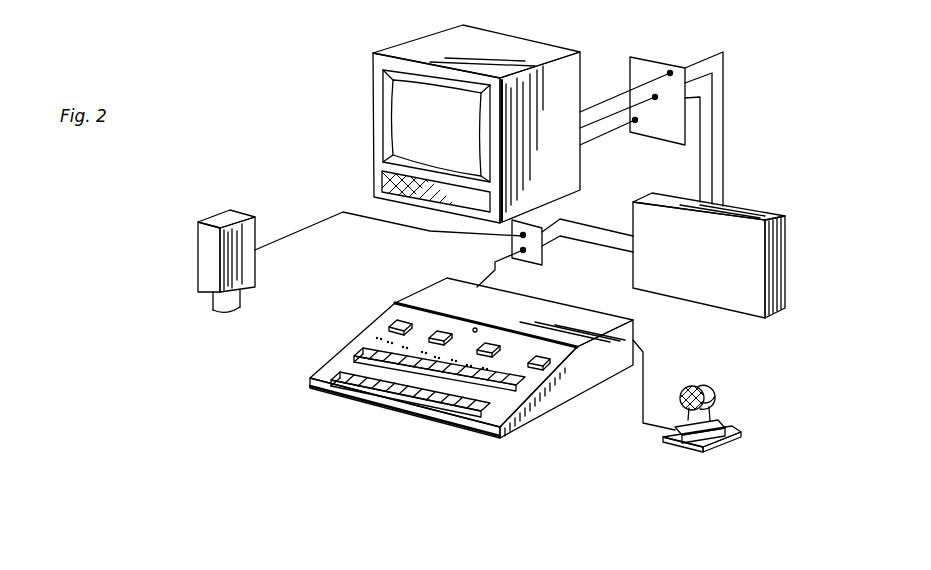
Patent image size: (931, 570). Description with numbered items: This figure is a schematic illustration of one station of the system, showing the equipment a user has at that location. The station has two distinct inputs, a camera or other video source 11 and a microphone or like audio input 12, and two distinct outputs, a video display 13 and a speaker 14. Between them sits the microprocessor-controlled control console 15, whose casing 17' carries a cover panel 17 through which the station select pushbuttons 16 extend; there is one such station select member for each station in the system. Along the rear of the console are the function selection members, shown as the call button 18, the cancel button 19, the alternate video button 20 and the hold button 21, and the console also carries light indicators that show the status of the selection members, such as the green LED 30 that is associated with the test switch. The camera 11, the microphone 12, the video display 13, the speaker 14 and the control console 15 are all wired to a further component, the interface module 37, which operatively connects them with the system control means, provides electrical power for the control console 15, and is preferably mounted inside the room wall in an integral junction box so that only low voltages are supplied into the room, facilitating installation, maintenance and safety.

The camera 11 is at (211, 201).
The microphone 12 is at (688, 475).
The video display 13 is at (350, 138).
The speaker 14 is at (386, 184).
The control console 15 is at (496, 353).
The pushbuttons 16 is at (512, 400).
The cover panel 17 is at (566, 379).
The casing 17' is at (644, 343).
The call button 18 is at (392, 324).
The cancel button 19 is at (443, 331).
The alternate video button 20 is at (493, 345).
The hold button 21 is at (540, 357).
The green LED 30 is at (474, 328).
The interface module 37 is at (812, 182).